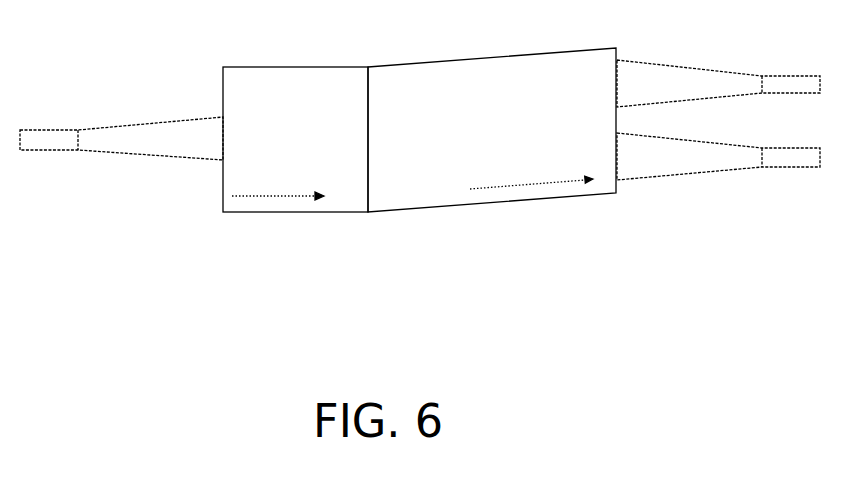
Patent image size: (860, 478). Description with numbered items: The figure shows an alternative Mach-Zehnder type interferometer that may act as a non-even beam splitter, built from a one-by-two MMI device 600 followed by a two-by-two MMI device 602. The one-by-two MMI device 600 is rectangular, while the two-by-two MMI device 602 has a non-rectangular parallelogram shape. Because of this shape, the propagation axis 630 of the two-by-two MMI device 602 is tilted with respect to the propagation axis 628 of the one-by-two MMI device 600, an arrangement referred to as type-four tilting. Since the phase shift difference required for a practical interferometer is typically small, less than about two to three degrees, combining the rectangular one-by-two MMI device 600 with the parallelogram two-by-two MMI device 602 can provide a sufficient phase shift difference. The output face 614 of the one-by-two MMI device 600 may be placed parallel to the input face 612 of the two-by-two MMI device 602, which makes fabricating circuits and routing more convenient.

The 1×2 MMI device 600 is at (194, 117).
The 2×2 MMI device 602 is at (594, 111).
The input face 612 is at (385, 229).
The output face 614 is at (367, 229).
The propagation axis 628 is at (278, 184).
The propagation axis 630 is at (531, 169).